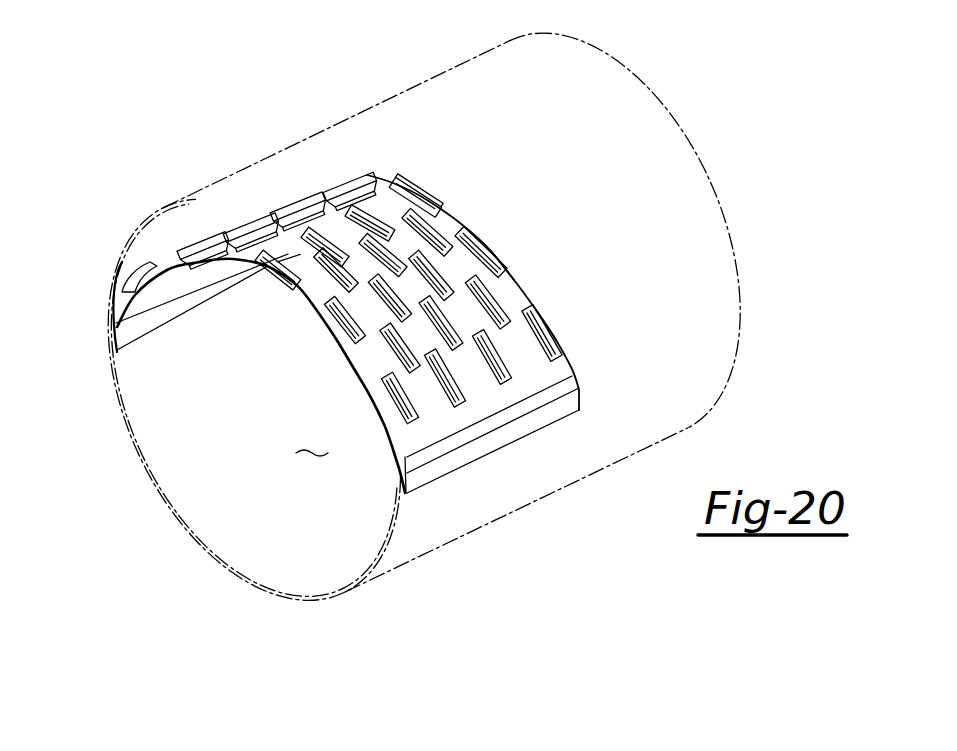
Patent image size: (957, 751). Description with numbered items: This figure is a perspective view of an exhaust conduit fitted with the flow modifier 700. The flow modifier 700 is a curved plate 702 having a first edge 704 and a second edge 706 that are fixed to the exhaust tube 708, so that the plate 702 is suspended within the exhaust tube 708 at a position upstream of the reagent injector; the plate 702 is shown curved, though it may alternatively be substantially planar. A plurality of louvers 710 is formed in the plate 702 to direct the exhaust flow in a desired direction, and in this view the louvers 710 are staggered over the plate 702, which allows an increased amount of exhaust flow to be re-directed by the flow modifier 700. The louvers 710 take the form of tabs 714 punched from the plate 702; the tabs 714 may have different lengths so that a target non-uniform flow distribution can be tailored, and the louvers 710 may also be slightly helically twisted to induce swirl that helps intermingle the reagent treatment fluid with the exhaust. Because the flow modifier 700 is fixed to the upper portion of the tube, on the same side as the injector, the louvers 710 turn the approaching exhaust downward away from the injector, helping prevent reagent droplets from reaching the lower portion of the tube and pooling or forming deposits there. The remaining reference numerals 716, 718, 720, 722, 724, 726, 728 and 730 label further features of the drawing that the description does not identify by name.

The flow modifier 700 is at (494, 213).
The curved plate 702 is at (557, 373).
The first edge 704 is at (158, 330).
The second edge 706 is at (516, 432).
The exhaust tube 708 is at (463, 535).
The louvers 710 is at (357, 167).
The tabs 714 is at (417, 193).
The direction arrow 716 is at (158, 242).
The axial direction arrow 718 is at (162, 430).
The pipe 720 is at (735, 150).
The tab end 722 is at (297, 267).
The band edge portion 724 is at (497, 247).
The band surface 726 is at (523, 300).
The interior of pipe 728 is at (314, 437).
The pipe wall 730 is at (247, 567).